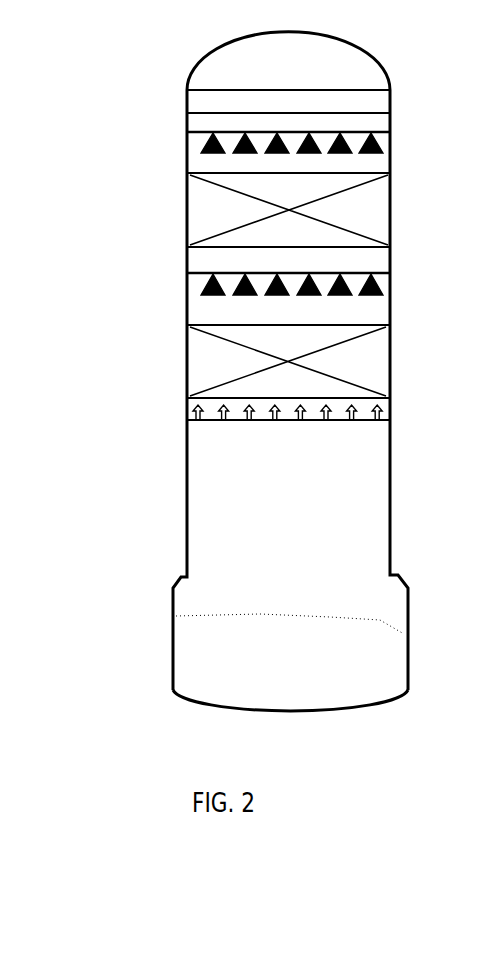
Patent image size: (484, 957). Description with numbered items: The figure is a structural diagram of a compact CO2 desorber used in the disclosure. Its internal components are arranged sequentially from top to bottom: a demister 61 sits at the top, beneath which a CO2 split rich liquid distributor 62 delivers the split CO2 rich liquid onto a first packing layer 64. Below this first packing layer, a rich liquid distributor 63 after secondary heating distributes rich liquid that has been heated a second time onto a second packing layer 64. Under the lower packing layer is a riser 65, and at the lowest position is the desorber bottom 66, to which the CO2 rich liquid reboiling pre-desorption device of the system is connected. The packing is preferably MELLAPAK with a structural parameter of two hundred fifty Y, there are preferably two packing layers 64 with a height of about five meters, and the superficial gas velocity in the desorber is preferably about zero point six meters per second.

The demister 61 is at (178, 103).
The CO2 split rich liquid distributor 62 is at (180, 133).
The rich liquid distributor after secondary heating 63 is at (182, 275).
The packing layer 64 is at (183, 207).
The riser 65 is at (188, 420).
The CO2 desorber bottom 66 is at (177, 640).